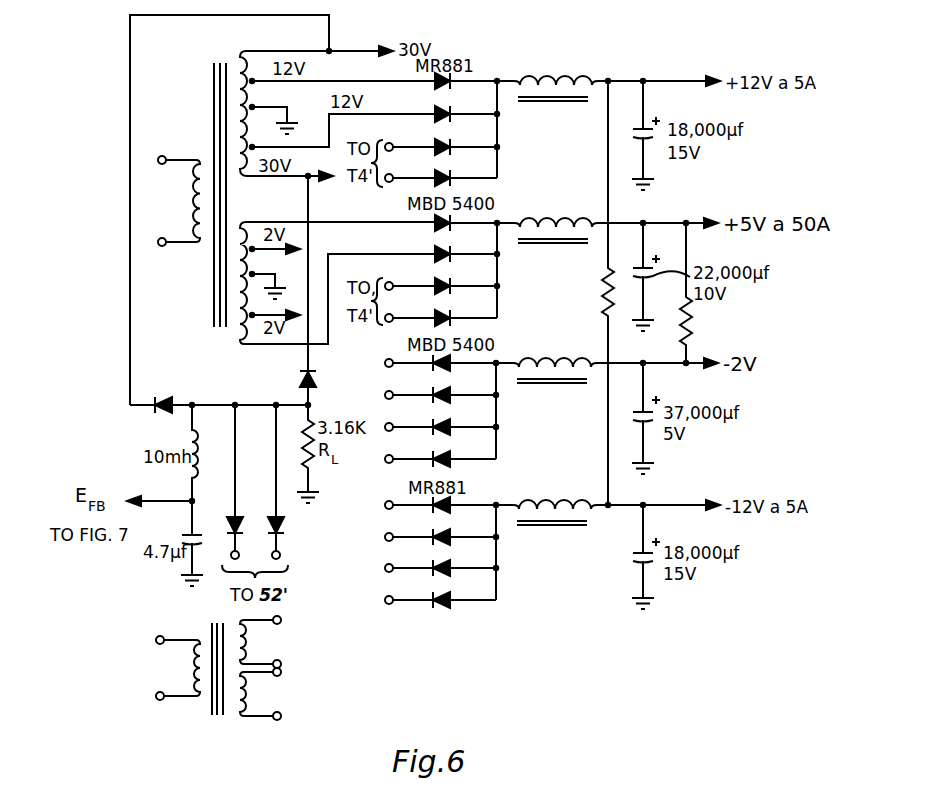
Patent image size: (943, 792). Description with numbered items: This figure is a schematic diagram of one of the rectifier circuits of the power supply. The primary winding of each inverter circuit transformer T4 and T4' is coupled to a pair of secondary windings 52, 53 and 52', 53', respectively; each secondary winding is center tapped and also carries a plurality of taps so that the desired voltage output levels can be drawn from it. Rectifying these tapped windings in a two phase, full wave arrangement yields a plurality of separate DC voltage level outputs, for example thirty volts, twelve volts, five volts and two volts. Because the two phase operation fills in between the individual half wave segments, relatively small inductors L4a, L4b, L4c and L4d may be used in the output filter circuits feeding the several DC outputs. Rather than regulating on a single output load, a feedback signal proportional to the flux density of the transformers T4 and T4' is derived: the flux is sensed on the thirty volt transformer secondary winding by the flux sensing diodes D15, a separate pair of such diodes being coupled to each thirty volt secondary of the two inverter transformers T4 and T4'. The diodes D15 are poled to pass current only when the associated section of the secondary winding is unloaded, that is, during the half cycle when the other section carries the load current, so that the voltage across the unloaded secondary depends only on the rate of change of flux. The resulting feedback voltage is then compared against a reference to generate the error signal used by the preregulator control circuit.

The secondary winding 52 is at (304, 105).
The secondary winding 53 is at (323, 295).
The secondary winding 52' is at (271, 642).
The secondary winding 53' is at (271, 694).
The inverter circuit transformer T4 is at (192, 195).
The inverter circuit transformer T4' is at (189, 664).
The flux sensing diodes D15 is at (156, 398).
The inductor L4a is at (570, 103).
The inductor L4b is at (570, 245).
The inductor L4c is at (570, 385).
The inductor L4d is at (570, 527).